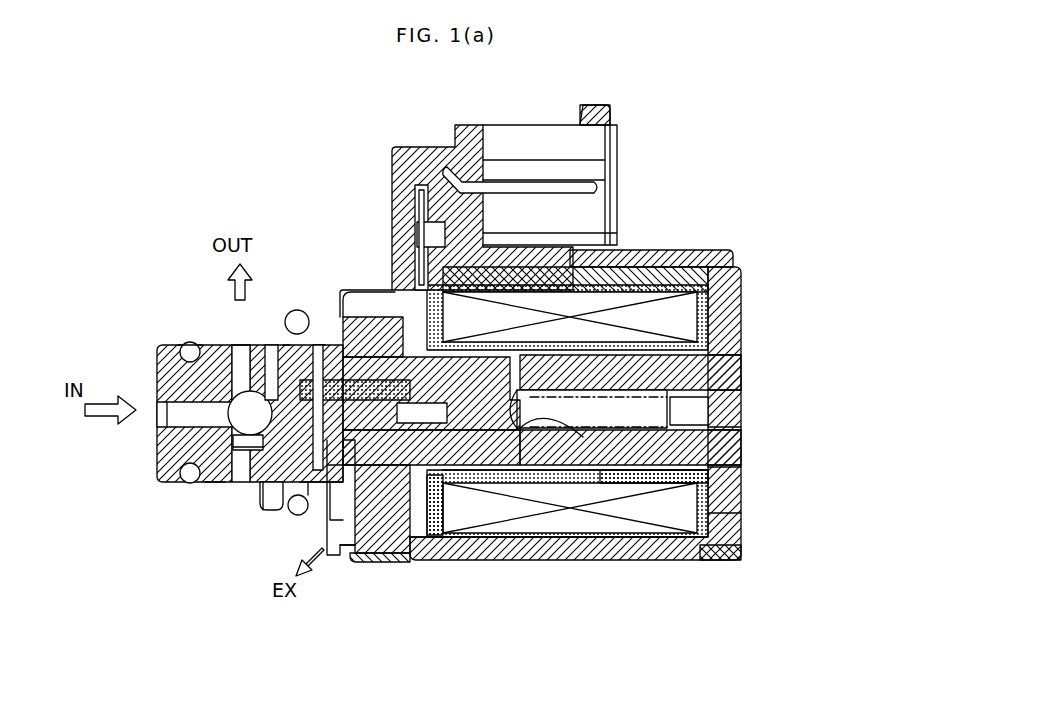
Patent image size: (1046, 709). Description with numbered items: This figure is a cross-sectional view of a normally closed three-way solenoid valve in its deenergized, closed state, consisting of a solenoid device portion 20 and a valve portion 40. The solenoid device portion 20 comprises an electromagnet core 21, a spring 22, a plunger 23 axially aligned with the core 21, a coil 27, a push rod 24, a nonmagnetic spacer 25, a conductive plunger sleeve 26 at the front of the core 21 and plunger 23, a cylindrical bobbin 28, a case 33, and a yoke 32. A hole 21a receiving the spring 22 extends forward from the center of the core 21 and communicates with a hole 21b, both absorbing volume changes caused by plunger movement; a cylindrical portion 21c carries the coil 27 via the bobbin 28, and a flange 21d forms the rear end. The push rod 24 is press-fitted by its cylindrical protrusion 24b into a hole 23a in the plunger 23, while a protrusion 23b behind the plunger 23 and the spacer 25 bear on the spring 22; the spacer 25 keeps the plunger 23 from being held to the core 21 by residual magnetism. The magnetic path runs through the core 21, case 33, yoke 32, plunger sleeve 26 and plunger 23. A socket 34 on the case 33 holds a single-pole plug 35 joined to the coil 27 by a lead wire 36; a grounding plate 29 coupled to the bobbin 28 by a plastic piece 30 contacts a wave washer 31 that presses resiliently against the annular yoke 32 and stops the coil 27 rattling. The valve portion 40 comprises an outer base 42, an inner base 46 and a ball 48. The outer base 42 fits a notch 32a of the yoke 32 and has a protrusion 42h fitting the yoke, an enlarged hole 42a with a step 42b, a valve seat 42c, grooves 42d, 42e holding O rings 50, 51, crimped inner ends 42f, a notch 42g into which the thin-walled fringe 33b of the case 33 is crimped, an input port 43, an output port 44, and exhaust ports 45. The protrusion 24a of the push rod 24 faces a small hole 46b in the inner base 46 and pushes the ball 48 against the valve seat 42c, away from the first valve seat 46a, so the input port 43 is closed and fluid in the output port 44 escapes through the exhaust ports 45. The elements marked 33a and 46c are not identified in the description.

The solenoid device portion 20 is at (758, 180).
The core 21 is at (733, 355).
The hole 21a is at (733, 444).
The hole 21b is at (725, 410).
The cylindrical portion 21c is at (733, 467).
The flange 21d is at (733, 513).
The spring 22 is at (735, 380).
The plunger 23 is at (525, 470).
The hole 23a is at (437, 537).
The protrusion 23b is at (600, 480).
The push rod 24 is at (305, 518).
The protrusion 24a is at (300, 522).
The cylindrical protrusion 24b is at (330, 540).
The spacer 25 is at (567, 410).
The plunger sleeve 26 is at (520, 405).
The coil 27 is at (683, 262).
The bobbin 28 is at (705, 312).
The grounding plate 29 is at (390, 287).
The plastic piece 30 is at (650, 470).
The wave washer 31 is at (392, 290).
The yoke 32 is at (400, 480).
The notch 32a is at (380, 520).
The case 33 is at (700, 545).
The stopper 33a is at (733, 262).
The thin-walled fringe 33b is at (360, 563).
The socket 34 is at (620, 140).
The single-pole plug 35 is at (597, 187).
The lead wire 36 is at (437, 277).
The valve portion 40 is at (166, 262).
The outer base 42 is at (165, 485).
The enlarged hole 42a is at (203, 343).
The step 42b is at (275, 345).
The valve seat 42c is at (215, 482).
The groove 42d is at (183, 348).
The groove 42e is at (285, 345).
The inner ends 42f is at (318, 345).
The notch 42g is at (342, 548).
The protrusion 42h is at (395, 560).
The input port 43 is at (160, 415).
The output port 44 is at (240, 392).
The exhaust ports 45 is at (366, 292).
The inner base 46 is at (262, 480).
The first valve seat 46a is at (243, 470).
The small hole 46b is at (262, 482).
The O-ring 46c is at (298, 310).
The ball 48 is at (175, 475).
The O ring 50 is at (186, 343).
The O ring 51 is at (262, 510).